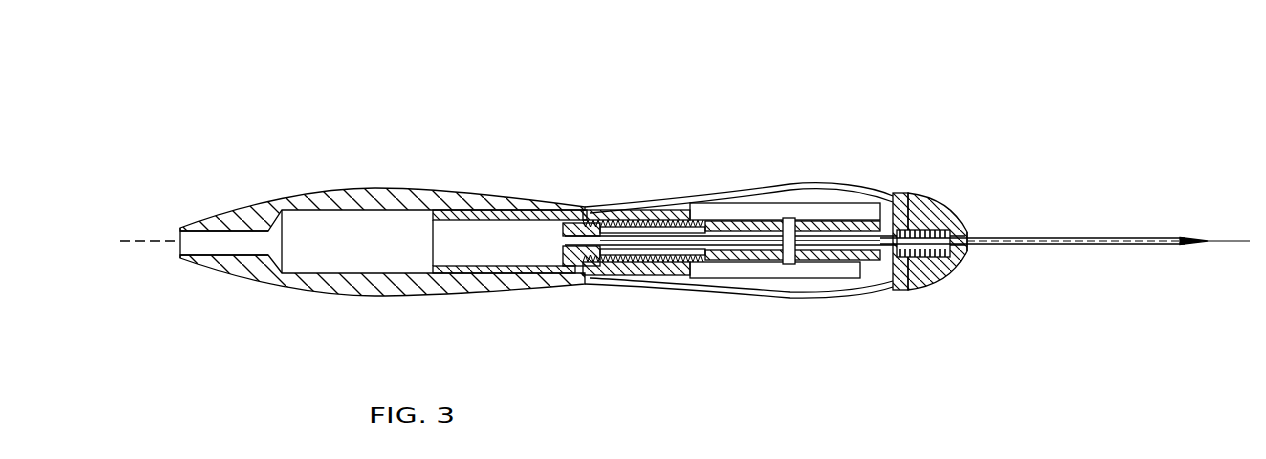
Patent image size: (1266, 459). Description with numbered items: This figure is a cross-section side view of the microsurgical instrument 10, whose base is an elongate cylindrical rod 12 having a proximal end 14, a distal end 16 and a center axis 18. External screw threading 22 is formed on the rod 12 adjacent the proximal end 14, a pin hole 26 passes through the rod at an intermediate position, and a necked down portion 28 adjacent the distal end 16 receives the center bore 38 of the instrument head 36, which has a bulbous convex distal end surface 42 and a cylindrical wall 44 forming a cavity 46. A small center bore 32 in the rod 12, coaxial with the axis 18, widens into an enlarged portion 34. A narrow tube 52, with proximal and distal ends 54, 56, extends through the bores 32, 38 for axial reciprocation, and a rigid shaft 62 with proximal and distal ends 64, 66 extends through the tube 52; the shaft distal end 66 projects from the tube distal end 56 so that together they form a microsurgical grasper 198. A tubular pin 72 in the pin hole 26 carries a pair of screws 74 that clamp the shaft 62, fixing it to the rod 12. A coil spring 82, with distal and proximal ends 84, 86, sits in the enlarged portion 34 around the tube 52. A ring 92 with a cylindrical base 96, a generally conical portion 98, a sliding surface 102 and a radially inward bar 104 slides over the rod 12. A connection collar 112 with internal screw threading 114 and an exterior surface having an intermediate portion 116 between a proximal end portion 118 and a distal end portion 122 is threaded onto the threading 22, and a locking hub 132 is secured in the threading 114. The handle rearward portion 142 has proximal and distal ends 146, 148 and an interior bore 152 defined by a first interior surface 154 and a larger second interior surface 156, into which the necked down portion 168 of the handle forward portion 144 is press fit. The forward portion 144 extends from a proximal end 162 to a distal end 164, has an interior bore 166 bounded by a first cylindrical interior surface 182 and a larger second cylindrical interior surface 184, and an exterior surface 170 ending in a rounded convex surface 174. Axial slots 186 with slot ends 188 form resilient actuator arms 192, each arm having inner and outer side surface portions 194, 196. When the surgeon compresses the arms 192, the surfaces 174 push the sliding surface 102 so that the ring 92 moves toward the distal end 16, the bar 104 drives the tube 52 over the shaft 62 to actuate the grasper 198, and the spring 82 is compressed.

The microsurgical instrument 10 is at (958, 106).
The rod 12 is at (731, 235).
The rod proximal end 14 is at (559, 205).
The rod distal end 16 is at (973, 229).
The center axis 18 is at (143, 241).
The external screw threading 22 is at (621, 218).
The pin hole 26 is at (807, 221).
The necked down portion of rod exterior surface 28 is at (934, 225).
The rod center bore 32 is at (976, 233).
The enlarged portion of rod center bore 34 is at (936, 195).
The instrument head 36 is at (967, 289).
The instrument head center bore 38 is at (975, 259).
The head distal end surface 42 is at (974, 262).
The cylindrical wall 44 is at (898, 286).
The cylindrical cavity 46 is at (905, 189).
The tube 52 is at (1098, 238).
The tube proximal end 54 is at (856, 279).
The tube distal end 56 is at (1205, 244).
The shaft 62 is at (700, 208).
The shaft proximal end 64 is at (566, 269).
The shaft distal end 66 is at (1209, 242).
The tubular pin 72 is at (757, 284).
The screws 74 is at (787, 217).
The coil spring 82 is at (942, 290).
The spring distal end 84 is at (910, 277).
The spring proximal end 86 is at (968, 247).
The ring 92 is at (839, 208).
The cylindrical base 96 is at (819, 278).
The generally conical portion 98 is at (905, 292).
The sliding surface 102 is at (878, 203).
The bar 104 is at (874, 279).
The connection collar 112 is at (600, 205).
The internal screw threading 114 is at (650, 219).
The intermediate portion 116 is at (642, 263).
The proximal end portion 118 is at (623, 263).
The distal end portion 122 is at (677, 277).
The locking hub 132 is at (558, 272).
The handle rearward portion 142 is at (358, 186).
The handle forward portion 144 is at (722, 299).
The handle rearward portion proximal end 146 is at (180, 229).
The handle rearward portion distal end 148 is at (603, 276).
The interior bore 152 is at (196, 243).
The first interior surface 154 is at (232, 258).
The second cylindrical interior surface 156 is at (330, 273).
The handle forward portion proximal end 162 is at (426, 212).
The handle forward portion distal end 164 is at (894, 292).
The cylindrical interior bore 166 is at (494, 235).
The necked down portion 168 is at (511, 209).
The exterior surface 170 is at (739, 286).
The rounded convex surface 174 is at (864, 203).
The first cylindrical interior surface 182 is at (453, 270).
The second cylindrical interior surface 184 is at (698, 203).
The axial slots 186 is at (768, 186).
The slot end 188 is at (682, 206).
The actuator arms 192 is at (744, 203).
The inner surface portions 194 is at (823, 203).
The outer surface portions 196 is at (796, 213).
The microsurgical grasper 198 is at (1200, 231).